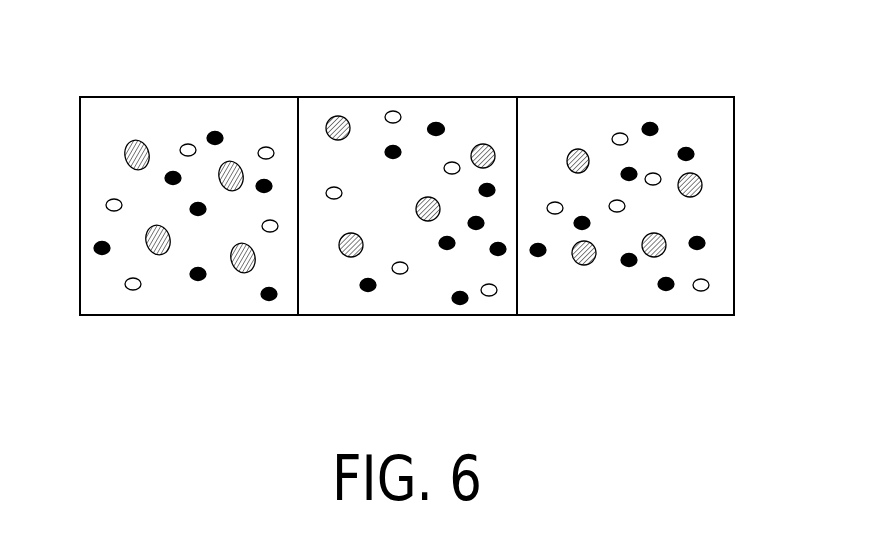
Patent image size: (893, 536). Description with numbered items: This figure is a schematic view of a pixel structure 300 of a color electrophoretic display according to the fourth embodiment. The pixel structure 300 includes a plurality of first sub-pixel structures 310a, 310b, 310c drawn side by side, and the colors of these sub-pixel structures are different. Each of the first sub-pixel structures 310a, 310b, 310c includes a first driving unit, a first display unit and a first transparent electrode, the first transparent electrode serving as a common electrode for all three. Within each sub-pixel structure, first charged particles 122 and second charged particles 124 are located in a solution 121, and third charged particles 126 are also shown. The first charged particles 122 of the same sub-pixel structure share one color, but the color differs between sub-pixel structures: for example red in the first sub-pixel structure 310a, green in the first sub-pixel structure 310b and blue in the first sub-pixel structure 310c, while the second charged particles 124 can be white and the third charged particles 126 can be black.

The solution 121 is at (312, 102).
The first charged particles 122 is at (127, 150).
The second charged particles 124 is at (110, 203).
The third charged particles 126 is at (95, 247).
The pixel structure 300 is at (805, 368).
The first sub-pixel structure 310a is at (187, 300).
The first sub-pixel structure 310b is at (407, 300).
The first sub-pixel structure 310c is at (623, 300).